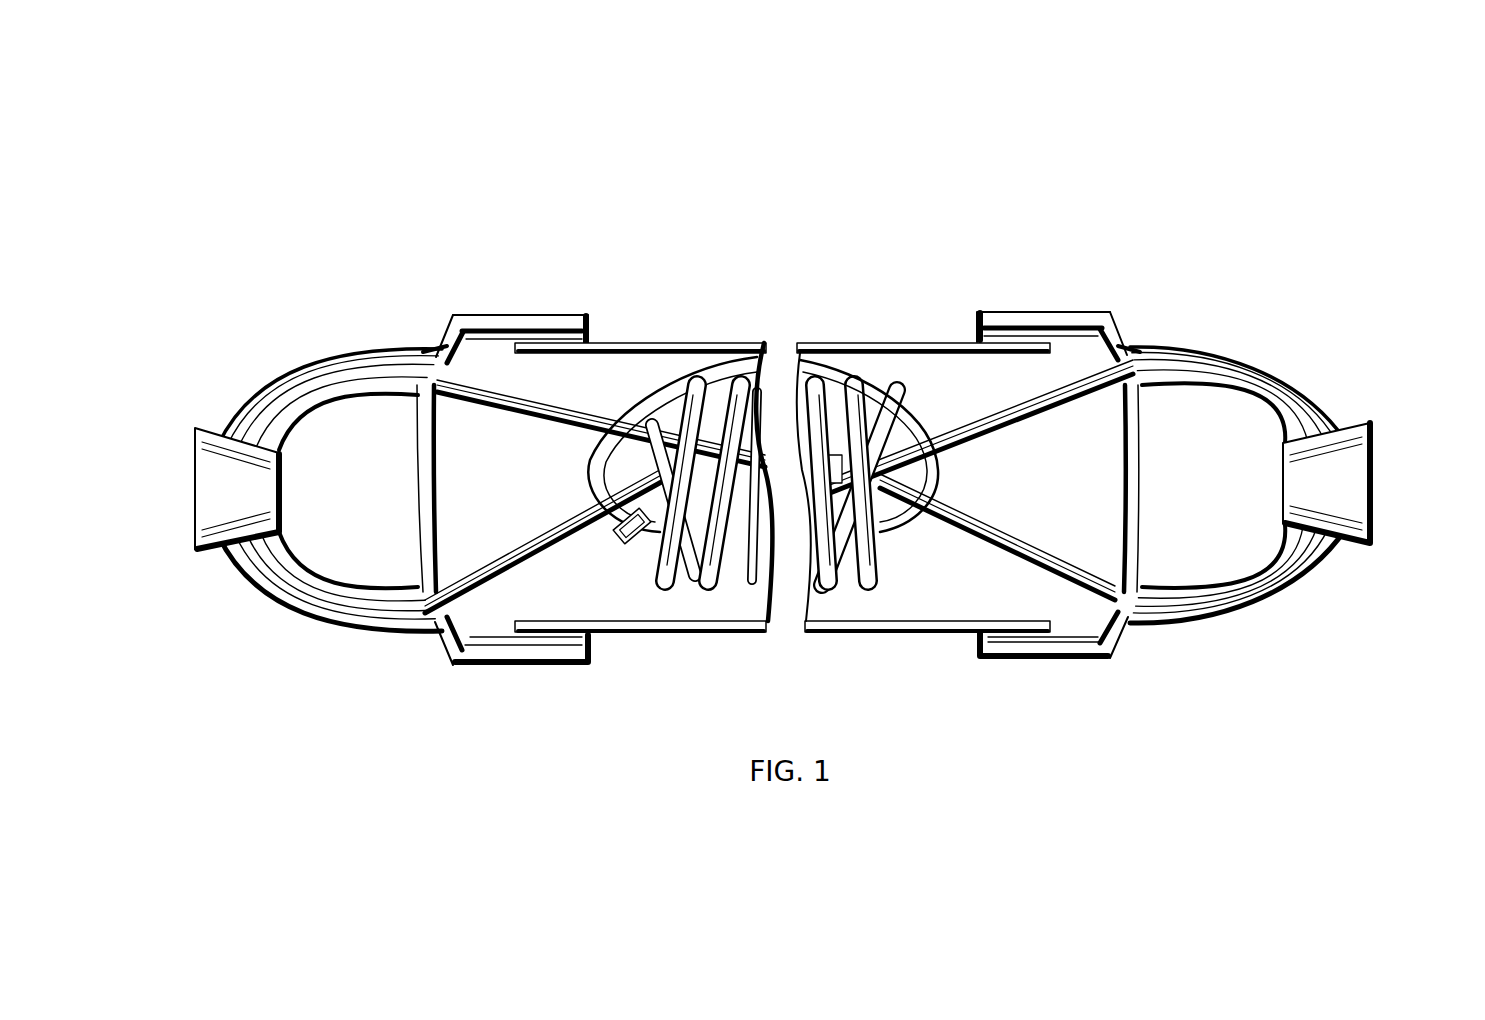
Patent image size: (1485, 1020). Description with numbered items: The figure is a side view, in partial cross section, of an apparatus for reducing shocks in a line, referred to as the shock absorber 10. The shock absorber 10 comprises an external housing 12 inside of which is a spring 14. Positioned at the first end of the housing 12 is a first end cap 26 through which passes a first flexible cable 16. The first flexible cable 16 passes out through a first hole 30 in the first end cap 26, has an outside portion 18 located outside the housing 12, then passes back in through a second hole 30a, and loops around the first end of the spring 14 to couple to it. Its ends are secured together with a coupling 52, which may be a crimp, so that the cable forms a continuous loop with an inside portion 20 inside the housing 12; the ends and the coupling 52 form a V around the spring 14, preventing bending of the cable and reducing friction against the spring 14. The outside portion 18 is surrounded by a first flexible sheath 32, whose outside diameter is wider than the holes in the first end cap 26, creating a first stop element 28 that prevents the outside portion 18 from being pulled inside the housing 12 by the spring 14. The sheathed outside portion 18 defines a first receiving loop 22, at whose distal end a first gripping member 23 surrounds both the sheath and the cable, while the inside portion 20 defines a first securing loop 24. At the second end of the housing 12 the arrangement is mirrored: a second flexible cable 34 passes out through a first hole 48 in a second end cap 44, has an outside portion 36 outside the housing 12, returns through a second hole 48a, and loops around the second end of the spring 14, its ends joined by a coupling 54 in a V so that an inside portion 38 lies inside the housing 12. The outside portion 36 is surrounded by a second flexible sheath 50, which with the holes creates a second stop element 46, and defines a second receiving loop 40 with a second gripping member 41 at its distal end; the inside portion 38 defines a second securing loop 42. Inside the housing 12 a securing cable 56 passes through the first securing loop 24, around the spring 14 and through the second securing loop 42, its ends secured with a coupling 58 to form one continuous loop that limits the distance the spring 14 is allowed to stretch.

The shock absorber 10 is at (784, 414).
The external housing 12 is at (936, 341).
The spring 14 is at (715, 556).
The first flexible cable 16 is at (981, 476).
The outside portion of first flexible cable 18 is at (1232, 376).
The inside portion of first flexible cable 20 is at (978, 432).
The first receiving loop 22 is at (1222, 503).
The first gripping member 23 is at (1365, 487).
The first securing loop 24 is at (1097, 612).
The first end cap 26 is at (1072, 314).
The first stop element 28 is at (1137, 334).
The first hole 30 is at (1100, 358).
The second hole 30a is at (1142, 575).
The first flexible sheath 32 is at (1160, 394).
The second flexible cable 34 is at (595, 496).
The outside portion of second flexible cable 36 is at (338, 380).
The inside portion of second flexible cable 38 is at (512, 292).
The second receiving loop 40 is at (313, 528).
The second gripping member 41 is at (207, 487).
The second securing loop 42 is at (477, 665).
The second end cap 44 is at (557, 318).
The second stop element 46 is at (426, 334).
The first hole 48 is at (445, 393).
The second hole 48a is at (478, 606).
The second flexible sheath 50 is at (352, 624).
The coupling 52 is at (895, 392).
The coupling 54 is at (672, 378).
The securing cable 56 is at (905, 528).
The coupling 58 is at (617, 540).